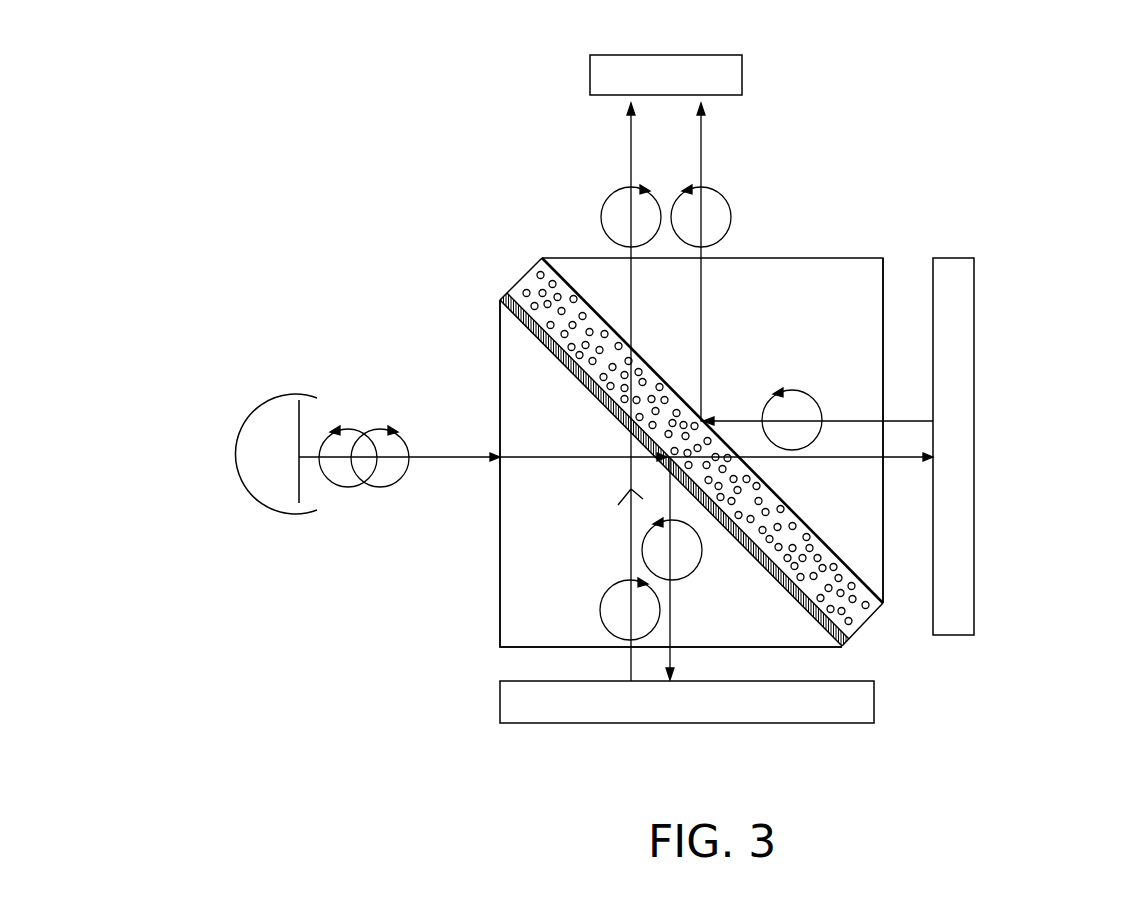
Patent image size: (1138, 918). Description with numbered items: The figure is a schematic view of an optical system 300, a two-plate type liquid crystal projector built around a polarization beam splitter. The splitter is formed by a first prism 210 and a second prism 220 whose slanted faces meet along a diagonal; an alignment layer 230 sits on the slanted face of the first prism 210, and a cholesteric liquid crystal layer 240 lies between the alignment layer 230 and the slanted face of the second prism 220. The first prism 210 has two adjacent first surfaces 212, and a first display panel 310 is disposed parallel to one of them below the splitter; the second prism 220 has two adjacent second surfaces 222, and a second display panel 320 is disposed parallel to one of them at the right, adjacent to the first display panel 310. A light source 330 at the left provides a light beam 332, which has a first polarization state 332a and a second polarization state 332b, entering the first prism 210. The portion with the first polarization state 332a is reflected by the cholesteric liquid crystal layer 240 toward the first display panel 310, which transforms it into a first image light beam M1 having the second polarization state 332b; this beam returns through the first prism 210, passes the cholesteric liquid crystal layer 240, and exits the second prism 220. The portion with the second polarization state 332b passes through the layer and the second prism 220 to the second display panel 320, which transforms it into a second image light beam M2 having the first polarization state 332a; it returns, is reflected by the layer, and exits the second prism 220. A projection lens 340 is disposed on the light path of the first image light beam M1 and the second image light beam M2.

The optical system 300 is at (1049, 807).
The projection lens 340 is at (732, 73).
The second display panel 320 is at (962, 287).
The first display panel 310 is at (510, 702).
The light source 330 is at (267, 428).
The first prism 210 is at (522, 598).
The second prism 220 is at (843, 270).
The first surfaces 212 is at (494, 355).
The second surfaces 222 is at (892, 551).
The alignment layer 230 is at (501, 304).
The cholesteric liquid crystal layer 240 is at (863, 627).
The light beam 332 is at (467, 457).
The first polarization state 332a is at (333, 430).
The second polarization state 332b is at (410, 470).
The first image light beam M1 is at (630, 155).
The second image light beam M2 is at (701, 167).